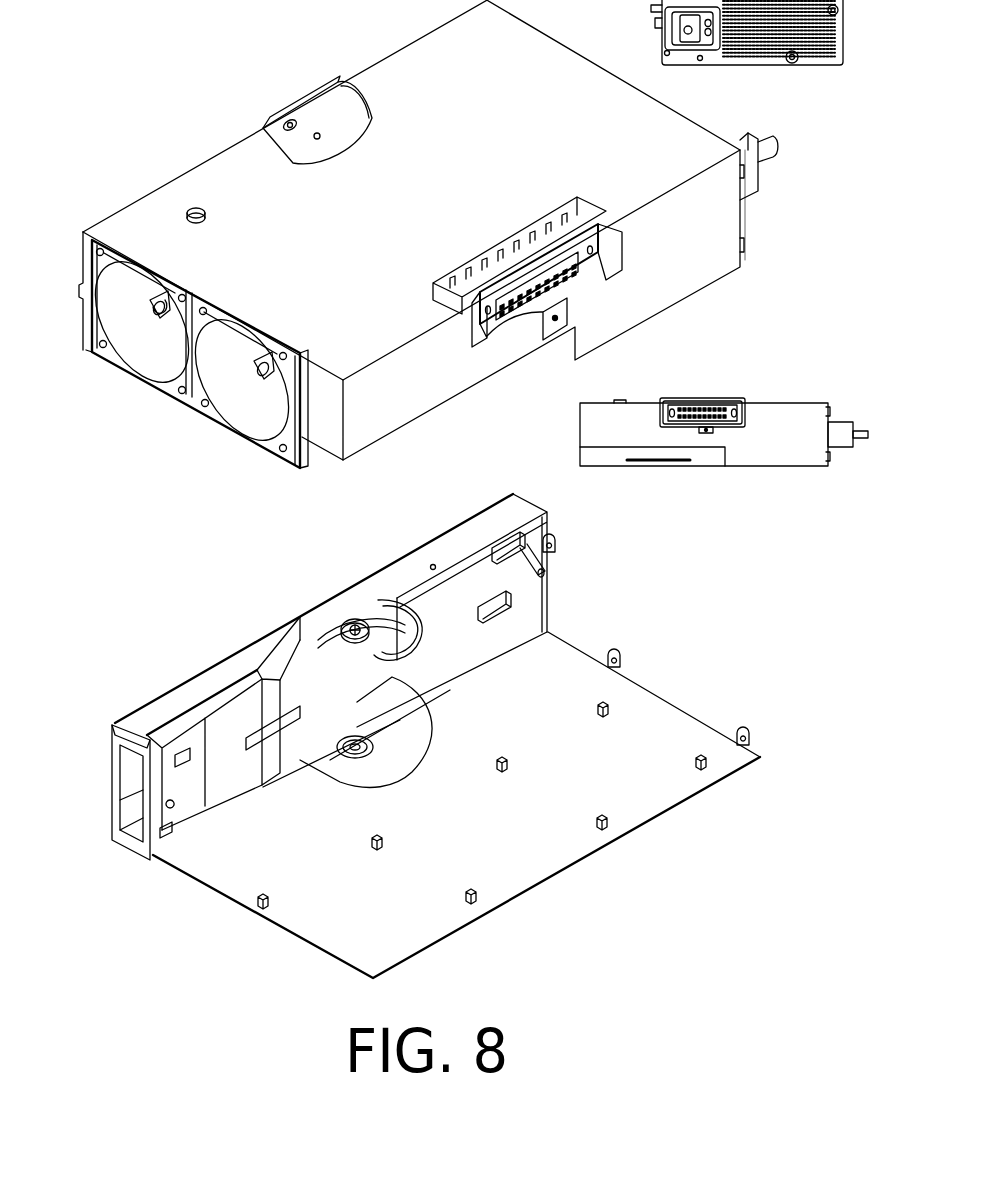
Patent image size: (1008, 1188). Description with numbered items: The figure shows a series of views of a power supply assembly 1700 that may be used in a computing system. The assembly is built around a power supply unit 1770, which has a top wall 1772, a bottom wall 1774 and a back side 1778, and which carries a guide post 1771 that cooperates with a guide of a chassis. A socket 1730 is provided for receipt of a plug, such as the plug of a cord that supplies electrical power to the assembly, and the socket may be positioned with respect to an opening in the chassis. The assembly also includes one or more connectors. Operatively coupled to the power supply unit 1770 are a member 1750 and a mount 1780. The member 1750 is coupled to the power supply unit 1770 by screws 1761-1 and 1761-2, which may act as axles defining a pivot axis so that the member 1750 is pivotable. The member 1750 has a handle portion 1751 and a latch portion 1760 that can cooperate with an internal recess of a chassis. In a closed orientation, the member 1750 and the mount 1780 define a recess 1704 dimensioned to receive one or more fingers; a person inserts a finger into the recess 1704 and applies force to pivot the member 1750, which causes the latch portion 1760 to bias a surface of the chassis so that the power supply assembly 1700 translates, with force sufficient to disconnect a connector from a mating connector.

The power supply assembly 1700 is at (158, 47).
The power supply unit 1770 is at (387, 54).
The guide post 1771 is at (207, 212).
The top wall 1772 is at (549, 150).
The back side 1778 is at (709, 232).
The bottom wall 1774 is at (797, 467).
The socket 1730 is at (688, 30).
The handle portion 1751 is at (142, 672).
The latch portion 1760 is at (438, 672).
The mount 1780 is at (455, 545).
The member 1750 is at (245, 663).
The recess 1704 is at (125, 800).
The screw 1761-1 is at (345, 620).
The screw 1761-2 is at (357, 760).